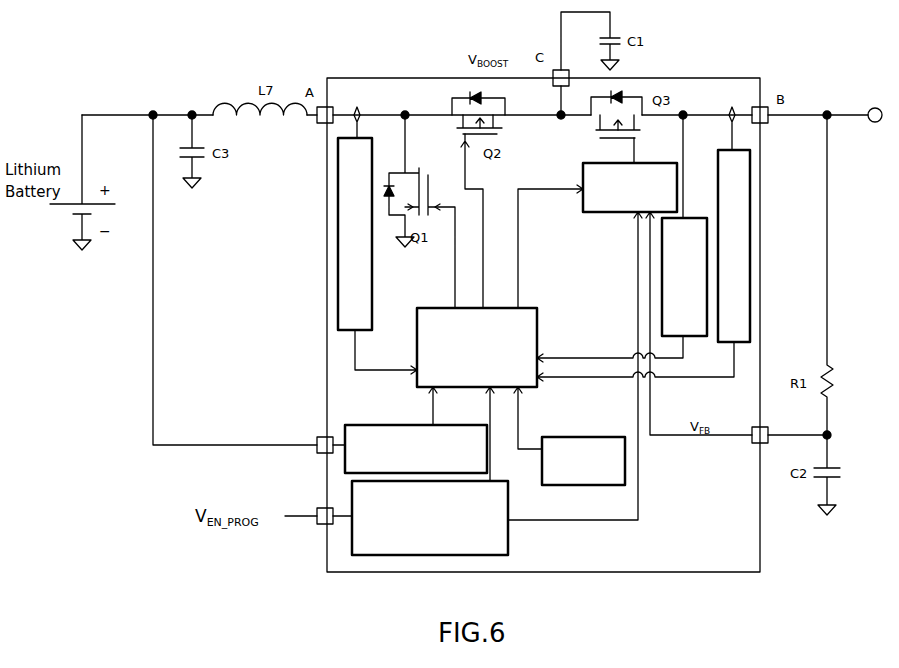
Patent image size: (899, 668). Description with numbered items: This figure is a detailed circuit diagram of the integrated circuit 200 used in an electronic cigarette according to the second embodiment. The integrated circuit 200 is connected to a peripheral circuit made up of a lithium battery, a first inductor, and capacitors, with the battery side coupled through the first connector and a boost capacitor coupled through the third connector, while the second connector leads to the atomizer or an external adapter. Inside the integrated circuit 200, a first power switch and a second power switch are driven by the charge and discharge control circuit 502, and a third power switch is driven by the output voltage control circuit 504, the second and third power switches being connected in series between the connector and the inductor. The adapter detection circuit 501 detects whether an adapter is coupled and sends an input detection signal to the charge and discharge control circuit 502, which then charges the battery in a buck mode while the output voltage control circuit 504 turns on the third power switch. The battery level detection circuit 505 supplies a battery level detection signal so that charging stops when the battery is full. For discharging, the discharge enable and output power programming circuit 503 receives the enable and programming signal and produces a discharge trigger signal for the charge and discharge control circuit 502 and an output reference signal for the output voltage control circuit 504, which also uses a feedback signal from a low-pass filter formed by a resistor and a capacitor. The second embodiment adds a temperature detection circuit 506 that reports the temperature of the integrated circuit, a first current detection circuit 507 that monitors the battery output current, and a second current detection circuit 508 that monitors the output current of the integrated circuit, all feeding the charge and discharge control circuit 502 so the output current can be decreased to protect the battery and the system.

The integrated circuit 200 is at (670, 78).
The adapter detection circuit 501 is at (695, 218).
The charge and discharge control circuit 502 is at (540, 320).
The discharge enable and output power programming circuit 503 is at (508, 500).
The output voltage control circuit 504 is at (603, 212).
The battery level detection circuit 505 is at (395, 425).
The temperature detection circuit 506 is at (556, 437).
The first current detection circuit 507 is at (372, 300).
The second current detection circuit 508 is at (750, 282).